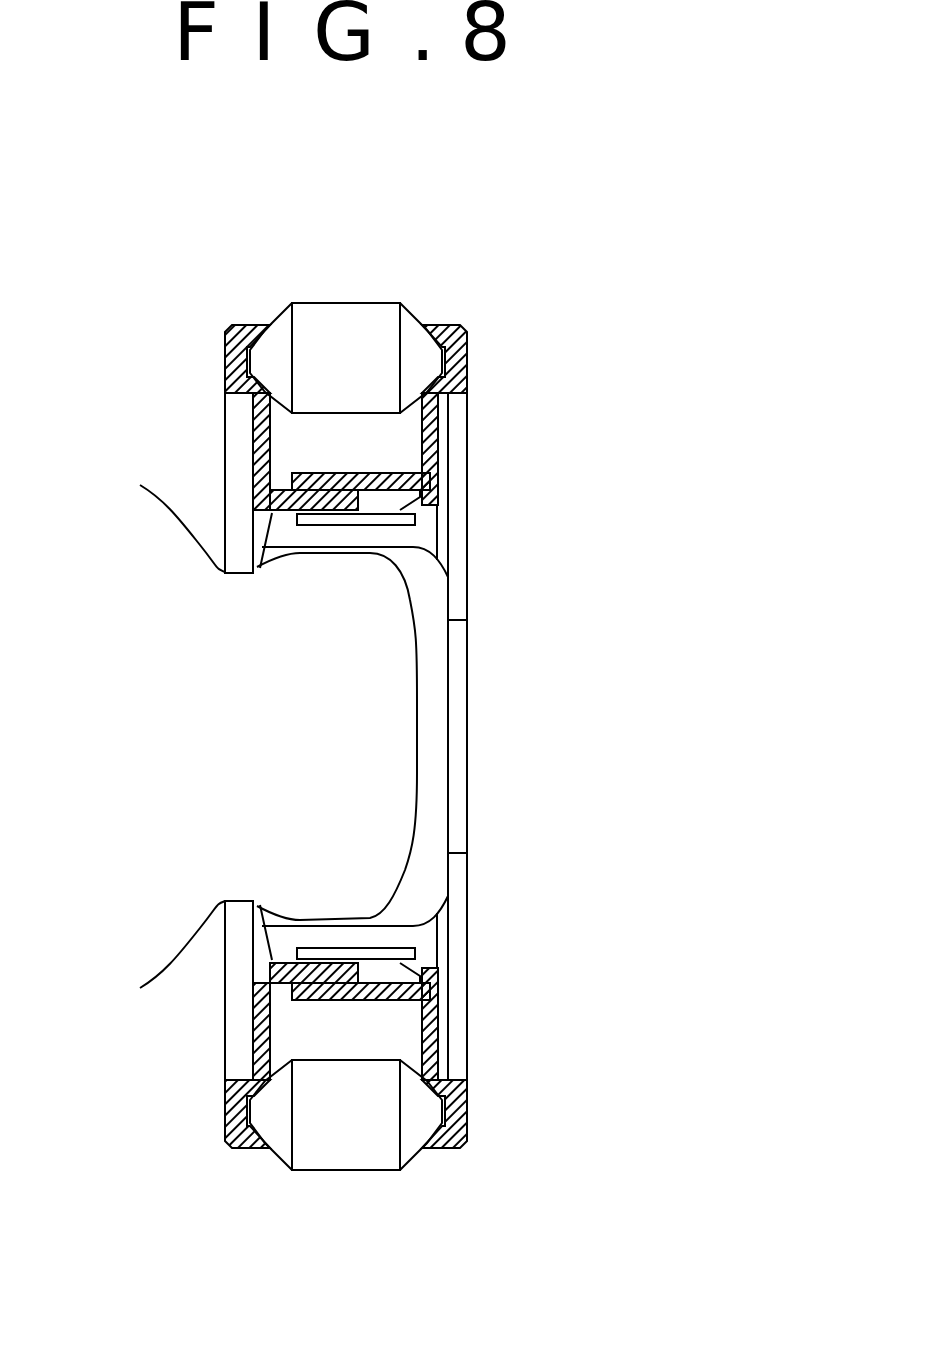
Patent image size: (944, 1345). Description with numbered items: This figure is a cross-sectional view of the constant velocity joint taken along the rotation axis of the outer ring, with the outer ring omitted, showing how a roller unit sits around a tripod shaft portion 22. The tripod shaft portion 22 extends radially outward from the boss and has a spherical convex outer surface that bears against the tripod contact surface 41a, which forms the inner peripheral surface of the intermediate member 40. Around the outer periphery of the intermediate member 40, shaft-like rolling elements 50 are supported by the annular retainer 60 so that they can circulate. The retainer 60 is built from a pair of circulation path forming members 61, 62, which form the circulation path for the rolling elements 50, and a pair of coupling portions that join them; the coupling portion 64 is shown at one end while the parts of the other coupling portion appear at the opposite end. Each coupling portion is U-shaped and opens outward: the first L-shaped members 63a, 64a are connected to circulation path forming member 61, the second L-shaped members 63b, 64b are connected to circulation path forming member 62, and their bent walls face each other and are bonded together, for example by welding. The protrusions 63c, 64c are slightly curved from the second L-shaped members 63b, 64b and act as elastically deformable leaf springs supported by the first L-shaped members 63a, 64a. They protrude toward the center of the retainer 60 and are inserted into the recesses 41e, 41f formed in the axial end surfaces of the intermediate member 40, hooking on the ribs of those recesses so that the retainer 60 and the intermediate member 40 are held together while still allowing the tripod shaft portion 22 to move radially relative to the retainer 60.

The tripod shaft portion 22 is at (415, 810).
The intermediate member 40 is at (435, 785).
The tripod contact surface 41a is at (430, 743).
The recess 41e is at (435, 960).
The recess 41f is at (445, 520).
The rolling element 50 is at (303, 303).
The retainer 60 is at (468, 1118).
The circulation path forming member 61 is at (467, 1090).
The circulation path forming member 62 is at (232, 1108).
The first L-shaped member 63a is at (443, 990).
The second L-shaped member 63b is at (258, 982).
The protrusion 63c is at (357, 985).
The coupling portion 64 is at (440, 497).
The first L-shaped member 64a is at (427, 452).
The second L-shaped member 64b is at (255, 457).
The protrusion 64c is at (347, 490).